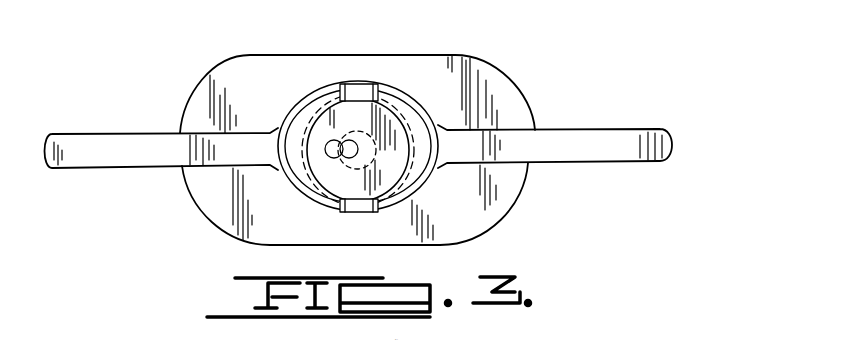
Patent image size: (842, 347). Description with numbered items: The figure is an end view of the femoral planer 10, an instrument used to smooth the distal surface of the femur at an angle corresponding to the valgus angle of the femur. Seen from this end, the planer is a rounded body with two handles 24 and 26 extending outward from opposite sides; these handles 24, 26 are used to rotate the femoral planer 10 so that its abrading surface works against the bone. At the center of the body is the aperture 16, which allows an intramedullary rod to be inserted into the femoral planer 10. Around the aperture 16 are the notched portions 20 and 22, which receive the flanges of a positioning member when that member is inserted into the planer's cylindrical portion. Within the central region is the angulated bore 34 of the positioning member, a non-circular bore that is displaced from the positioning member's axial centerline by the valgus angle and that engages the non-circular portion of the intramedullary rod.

The femoral planer 10 is at (612, 206).
The aperture 16 is at (345, 141).
The notched portion 20 is at (337, 110).
The notched portion 22 is at (347, 211).
The handle 24 is at (598, 128).
The handle 26 is at (83, 133).
The angulated bore 34 is at (330, 143).